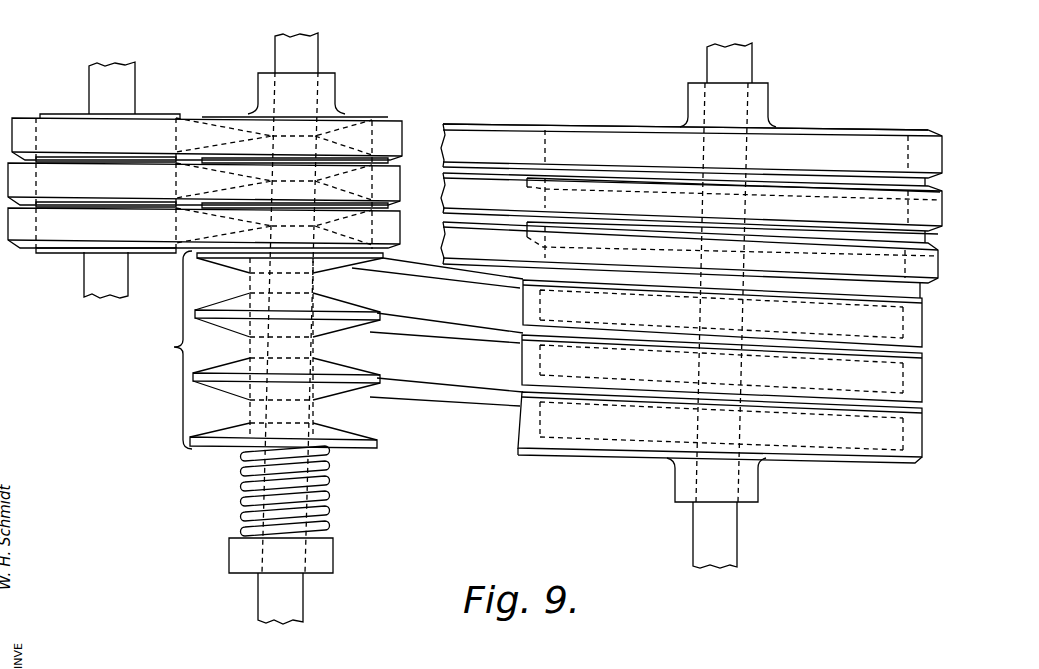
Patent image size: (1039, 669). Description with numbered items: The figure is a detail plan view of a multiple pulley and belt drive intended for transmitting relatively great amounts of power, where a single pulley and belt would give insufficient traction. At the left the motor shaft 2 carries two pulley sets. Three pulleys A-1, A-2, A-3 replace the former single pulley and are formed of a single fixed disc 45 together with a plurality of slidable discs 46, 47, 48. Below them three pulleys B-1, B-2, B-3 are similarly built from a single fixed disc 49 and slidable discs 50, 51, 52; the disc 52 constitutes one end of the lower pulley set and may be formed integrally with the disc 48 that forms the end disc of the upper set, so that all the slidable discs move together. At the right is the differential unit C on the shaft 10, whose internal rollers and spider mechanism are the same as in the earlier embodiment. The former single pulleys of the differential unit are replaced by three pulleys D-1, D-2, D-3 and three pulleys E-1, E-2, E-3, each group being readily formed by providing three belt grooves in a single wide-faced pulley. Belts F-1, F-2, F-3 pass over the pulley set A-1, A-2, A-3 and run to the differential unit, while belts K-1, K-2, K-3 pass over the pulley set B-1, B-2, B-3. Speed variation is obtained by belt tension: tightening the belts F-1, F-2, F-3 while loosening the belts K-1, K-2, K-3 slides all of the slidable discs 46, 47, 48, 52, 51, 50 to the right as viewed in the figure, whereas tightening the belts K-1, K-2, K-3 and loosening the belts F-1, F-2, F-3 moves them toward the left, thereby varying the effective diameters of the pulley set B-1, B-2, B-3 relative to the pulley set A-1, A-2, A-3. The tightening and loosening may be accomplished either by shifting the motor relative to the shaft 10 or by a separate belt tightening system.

The motor shaft 2 is at (282, 53).
The shaft 10 is at (733, 547).
The fixed disc 45 is at (366, 116).
The slidable disc 46 is at (386, 158).
The slidable disc 47 is at (386, 203).
The slidable disc 48 is at (380, 232).
The fixed disc 49 is at (360, 450).
The slidable disc 50 is at (362, 390).
The slidable disc 51 is at (363, 326).
The slidable disc 52 is at (363, 268).
The pulley A-1 is at (216, 114).
The pulley A-2 is at (216, 162).
The pulley A-3 is at (216, 208).
The pulley B-1 is at (198, 284).
The pulley B-2 is at (192, 350).
The pulley B-3 is at (196, 416).
The differential unit C is at (868, 112).
The pulley D-1 is at (908, 157).
The pulley D-2 is at (908, 214).
The pulley D-3 is at (905, 271).
The pulley E-1 is at (903, 331).
The pulley E-2 is at (903, 386).
The pulley E-3 is at (903, 442).
The belt F-1 is at (483, 135).
The belt F-2 is at (690, 193).
The belt F-3 is at (689, 243).
The belt K-1 is at (437, 284).
The belt K-2 is at (446, 341).
The belt K-3 is at (446, 403).